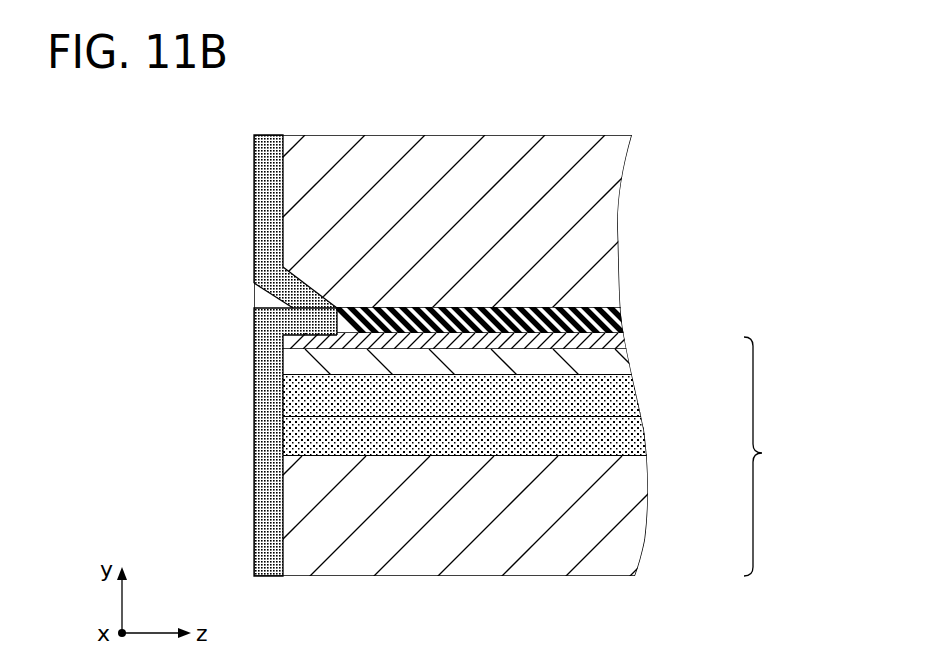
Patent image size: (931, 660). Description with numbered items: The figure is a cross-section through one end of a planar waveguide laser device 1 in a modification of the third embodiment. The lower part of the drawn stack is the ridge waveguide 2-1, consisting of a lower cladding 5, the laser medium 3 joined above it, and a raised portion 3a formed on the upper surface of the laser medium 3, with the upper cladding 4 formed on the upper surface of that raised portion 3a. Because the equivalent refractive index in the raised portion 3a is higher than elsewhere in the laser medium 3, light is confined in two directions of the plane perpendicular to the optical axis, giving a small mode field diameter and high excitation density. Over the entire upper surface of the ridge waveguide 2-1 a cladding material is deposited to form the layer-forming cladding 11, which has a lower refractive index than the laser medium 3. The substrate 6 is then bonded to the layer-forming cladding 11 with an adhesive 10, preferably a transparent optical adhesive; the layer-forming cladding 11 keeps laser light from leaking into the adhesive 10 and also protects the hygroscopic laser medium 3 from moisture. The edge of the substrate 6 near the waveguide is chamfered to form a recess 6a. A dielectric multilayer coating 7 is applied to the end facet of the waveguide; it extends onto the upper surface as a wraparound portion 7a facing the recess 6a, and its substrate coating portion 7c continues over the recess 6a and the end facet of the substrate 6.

The planar waveguide laser device 1 is at (722, 170).
The ridge waveguide 2-1 is at (776, 456).
The laser medium 3 is at (620, 437).
The raised portion 3a is at (296, 392).
The upper cladding 4 is at (618, 362).
The lower cladding 5 is at (620, 517).
The substrate 6 is at (588, 248).
The recess 6a is at (315, 290).
The coating 7 is at (262, 472).
The wraparound portion 7a is at (273, 314).
The substrate coating portion 7c is at (262, 183).
The adhesive 10 is at (620, 314).
The layer-forming cladding 11 is at (618, 343).